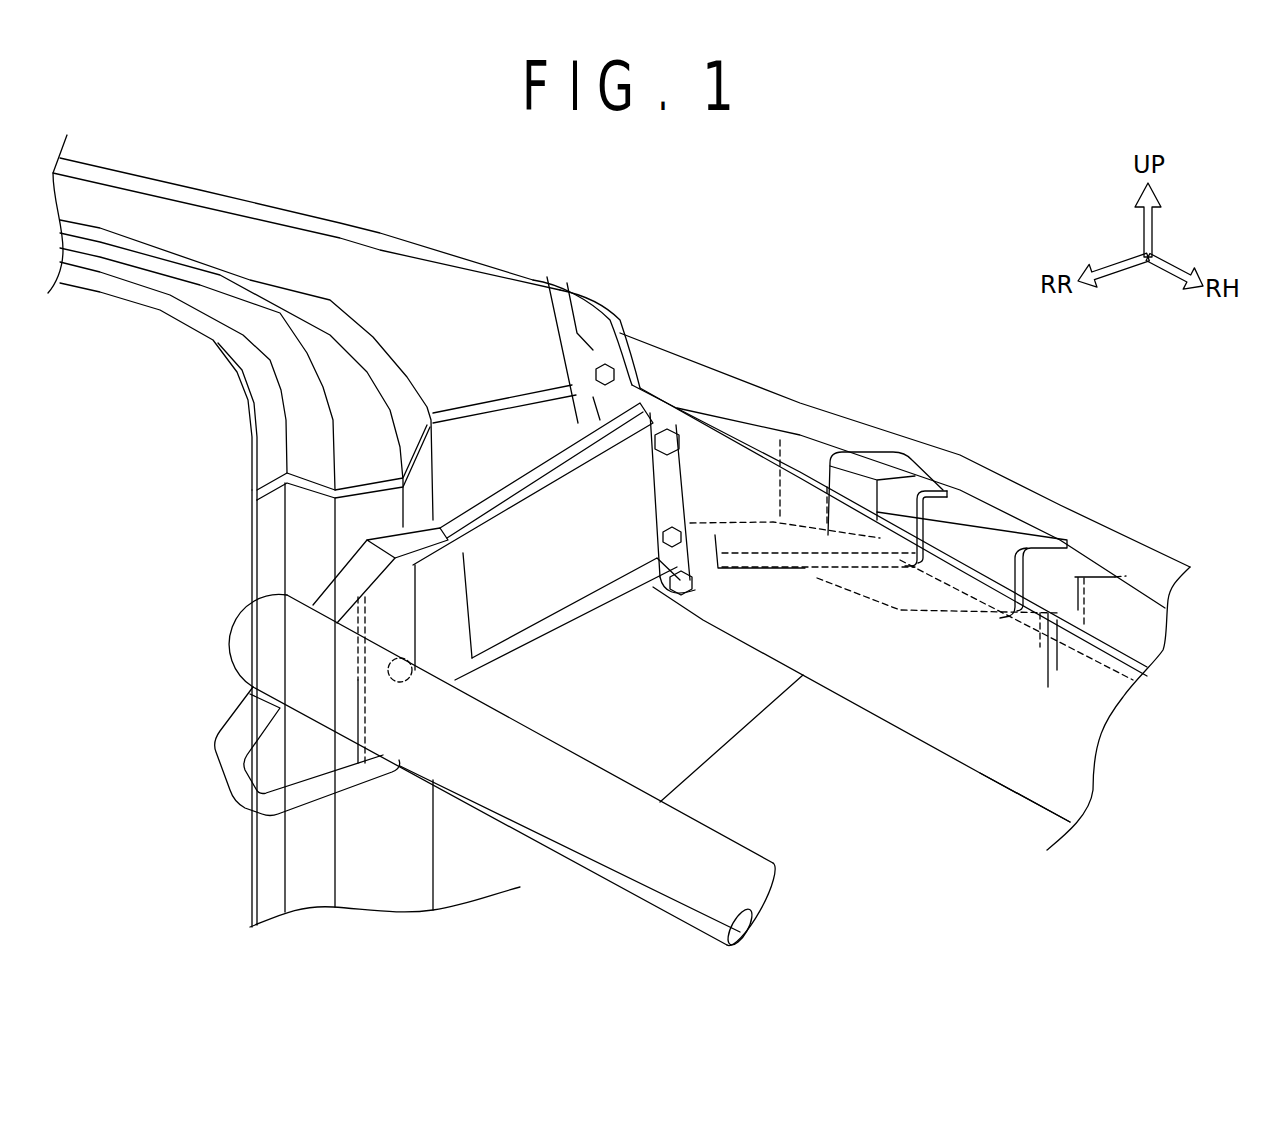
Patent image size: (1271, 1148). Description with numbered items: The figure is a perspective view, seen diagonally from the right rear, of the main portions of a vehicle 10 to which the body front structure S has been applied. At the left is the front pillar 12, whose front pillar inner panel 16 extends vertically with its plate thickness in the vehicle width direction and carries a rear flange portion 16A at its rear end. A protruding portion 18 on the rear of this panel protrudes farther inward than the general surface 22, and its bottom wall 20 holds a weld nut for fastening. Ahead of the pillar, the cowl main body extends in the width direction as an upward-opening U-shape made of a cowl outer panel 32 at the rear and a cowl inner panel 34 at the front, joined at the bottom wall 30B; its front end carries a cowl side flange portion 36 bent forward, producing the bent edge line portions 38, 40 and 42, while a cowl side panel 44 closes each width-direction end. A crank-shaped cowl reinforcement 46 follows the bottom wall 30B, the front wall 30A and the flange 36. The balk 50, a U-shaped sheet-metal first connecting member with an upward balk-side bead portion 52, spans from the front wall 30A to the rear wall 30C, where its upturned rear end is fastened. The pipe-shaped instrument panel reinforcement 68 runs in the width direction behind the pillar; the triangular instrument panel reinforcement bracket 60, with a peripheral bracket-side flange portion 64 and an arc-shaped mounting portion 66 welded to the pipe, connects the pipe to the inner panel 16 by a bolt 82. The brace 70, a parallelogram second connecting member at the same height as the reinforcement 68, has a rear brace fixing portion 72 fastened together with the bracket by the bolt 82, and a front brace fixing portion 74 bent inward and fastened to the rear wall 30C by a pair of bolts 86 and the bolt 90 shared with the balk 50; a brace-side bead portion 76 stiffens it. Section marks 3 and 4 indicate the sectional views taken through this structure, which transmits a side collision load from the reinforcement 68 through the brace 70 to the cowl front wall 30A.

The vehicle 10 is at (508, 208).
The body front structure S is at (703, 312).
The front pillar 12 is at (246, 461).
The front pillar inner panel 16 is at (472, 870).
The rear flange portion 16A is at (263, 897).
The protruding portion 18 is at (313, 883).
The bottom wall 20 is at (388, 887).
The general surface 22 is at (507, 460).
The cowl inner panel 34 is at (1112, 530).
The cowl side panel 44 is at (743, 437).
The bent edge line portion 38 is at (1145, 607).
The front wall 30A is at (1143, 642).
The cowl side flange portion 36 is at (1138, 570).
The bent edge line portion 40 is at (1107, 670).
The bottom wall 30B is at (1063, 755).
The cowl reinforcement 46 is at (970, 495).
The balk 50 is at (925, 476).
The balk-side bead portion 52 is at (767, 575).
The cowl outer panel 32 is at (820, 668).
The rear wall 30C is at (883, 675).
The bent edge line portion 42 is at (958, 760).
The instrument panel reinforcement 68 is at (750, 842).
The instrument panel reinforcement bracket 60 is at (227, 710).
The bracket-side flange portion 64 is at (230, 765).
The mounting portion 66 is at (303, 693).
The brace 70 is at (567, 637).
The rear brace fixing portion 72 is at (397, 600).
The front brace fixing portion 74 is at (665, 497).
The brace-side bead portion 76 is at (588, 572).
The bolt 86 is at (655, 456).
The bolt 90 is at (660, 542).
The bolt 82 is at (417, 667).
The section line 4 is at (872, 382).
The section line 3 is at (997, 448).